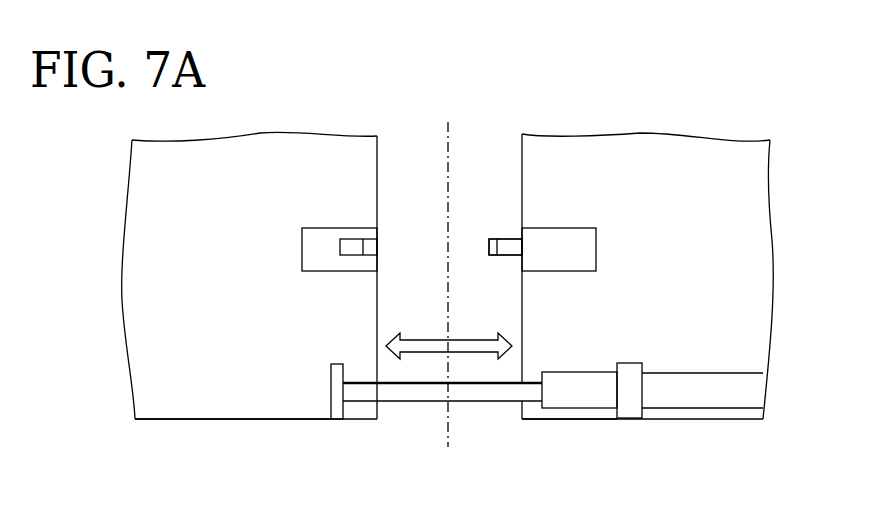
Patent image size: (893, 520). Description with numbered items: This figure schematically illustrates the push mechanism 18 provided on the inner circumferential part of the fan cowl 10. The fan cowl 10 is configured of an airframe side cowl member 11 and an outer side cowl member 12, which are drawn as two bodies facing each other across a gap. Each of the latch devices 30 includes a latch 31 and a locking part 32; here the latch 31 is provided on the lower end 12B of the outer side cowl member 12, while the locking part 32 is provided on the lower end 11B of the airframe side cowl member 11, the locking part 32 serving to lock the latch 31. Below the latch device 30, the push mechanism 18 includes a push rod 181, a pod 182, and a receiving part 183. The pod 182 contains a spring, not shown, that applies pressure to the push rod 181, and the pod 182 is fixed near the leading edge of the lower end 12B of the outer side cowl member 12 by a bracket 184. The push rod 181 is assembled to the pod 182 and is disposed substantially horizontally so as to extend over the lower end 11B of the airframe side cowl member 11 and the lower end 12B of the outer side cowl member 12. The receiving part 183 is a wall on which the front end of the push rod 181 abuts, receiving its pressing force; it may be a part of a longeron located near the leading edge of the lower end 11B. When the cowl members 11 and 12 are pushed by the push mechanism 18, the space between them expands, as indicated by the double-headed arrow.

The fan cowl 10 is at (740, 125).
The airframe side cowl member 11 is at (235, 147).
The lower end of the airframe side cowl member 11B is at (306, 420).
The outer side cowl member 12 is at (672, 140).
The lower end of the outer side cowl member 12B is at (562, 420).
The push mechanism 18 is at (475, 414).
The latch device 30 is at (604, 210).
The latch 31 is at (547, 228).
The locking part 32 is at (316, 228).
The push rod 181 is at (522, 362).
The pod 182 is at (710, 372).
The receiving part 183 is at (358, 362).
The bracket 184 is at (643, 392).